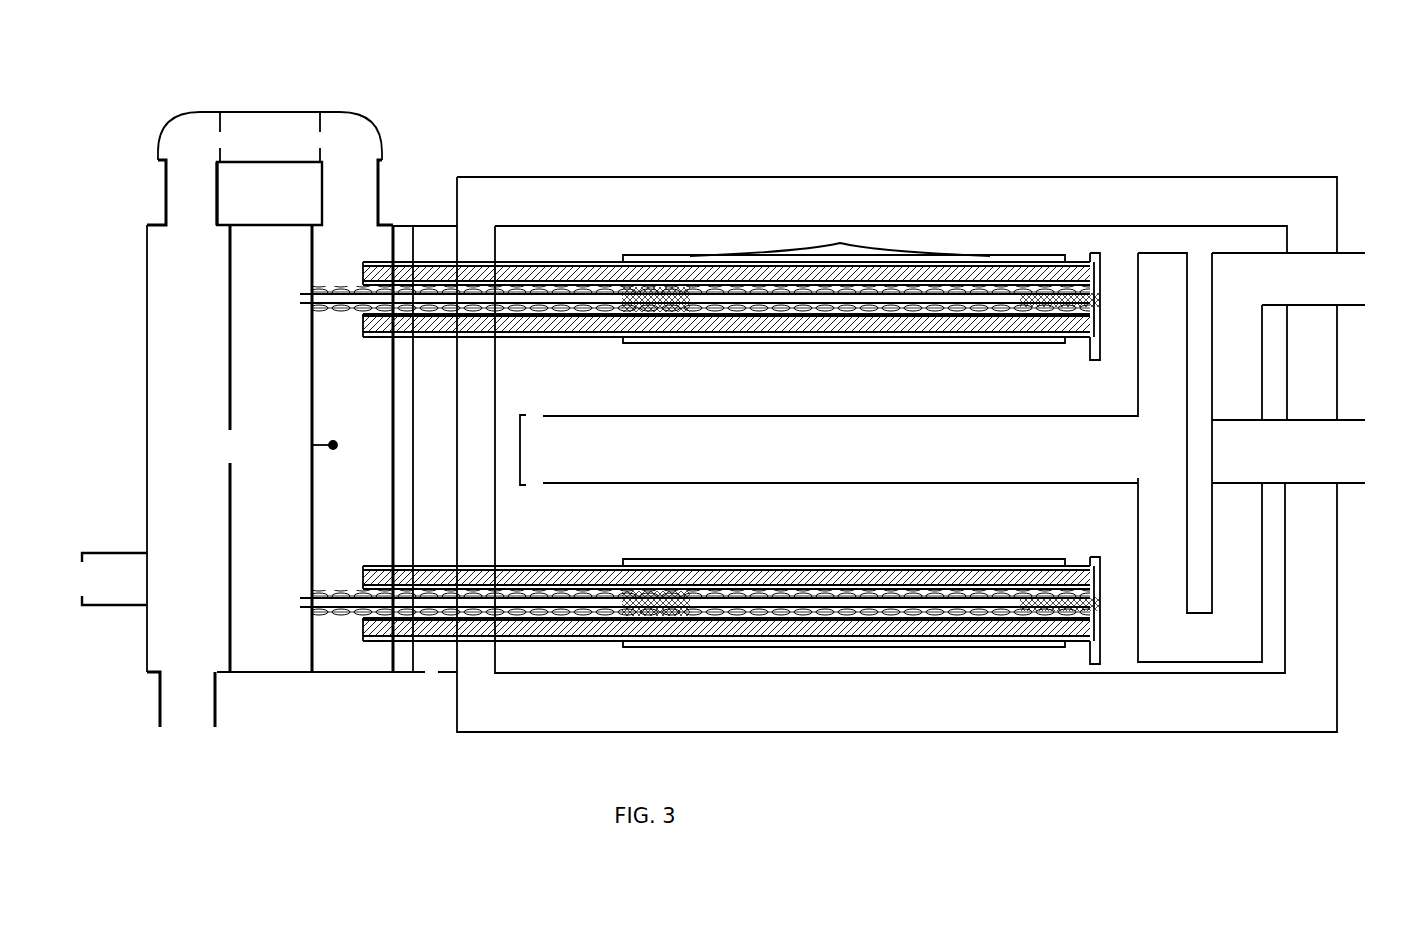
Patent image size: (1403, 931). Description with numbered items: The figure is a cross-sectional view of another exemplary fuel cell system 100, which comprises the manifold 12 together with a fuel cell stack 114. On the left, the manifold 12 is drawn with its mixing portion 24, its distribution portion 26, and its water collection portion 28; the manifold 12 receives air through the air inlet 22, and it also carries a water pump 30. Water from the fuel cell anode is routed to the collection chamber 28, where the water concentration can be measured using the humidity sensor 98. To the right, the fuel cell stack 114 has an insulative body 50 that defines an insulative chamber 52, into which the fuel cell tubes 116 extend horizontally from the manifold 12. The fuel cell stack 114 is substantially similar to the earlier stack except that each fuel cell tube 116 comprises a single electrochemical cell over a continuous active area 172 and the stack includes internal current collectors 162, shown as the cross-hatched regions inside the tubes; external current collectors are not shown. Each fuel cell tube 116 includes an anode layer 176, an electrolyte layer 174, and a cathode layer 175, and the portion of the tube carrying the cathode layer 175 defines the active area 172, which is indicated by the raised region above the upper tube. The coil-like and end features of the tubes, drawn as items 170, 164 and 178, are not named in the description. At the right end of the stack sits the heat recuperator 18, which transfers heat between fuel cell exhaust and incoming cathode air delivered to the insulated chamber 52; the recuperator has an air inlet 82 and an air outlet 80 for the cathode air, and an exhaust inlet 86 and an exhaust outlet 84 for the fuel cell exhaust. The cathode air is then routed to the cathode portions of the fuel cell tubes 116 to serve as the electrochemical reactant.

The fuel cell system 100 is at (128, 146).
The manifold 12 is at (380, 131).
The mixing portion 24 is at (167, 393).
The distribution portion 26 is at (265, 663).
The air inlet 22 is at (158, 680).
The water pump 30 is at (103, 558).
The humidity sensor 98 is at (332, 445).
The water collection portion 28 is at (341, 662).
The fuel cell stack 114 is at (508, 172).
The insulative body 50 is at (842, 663).
The insulative chamber 52 is at (1158, 707).
The air inlet 82 is at (1315, 267).
The exhaust outlet 84 is at (1355, 468).
The exhaust inlet 86 is at (1208, 453).
The air outlet 80 is at (538, 473).
The heat recuperator 18 is at (1084, 480).
The electrolyte layer 174 is at (522, 267).
The anode layer 176 is at (550, 318).
The cathode layer 175 is at (653, 260).
The active area 172 is at (840, 240).
The fuel cell tube 116 is at (598, 270).
The coil 170 is at (993, 313).
The internal current collector 162 is at (682, 307).
The end mesh 164 is at (1104, 298).
The end cap 178 is at (1087, 256).